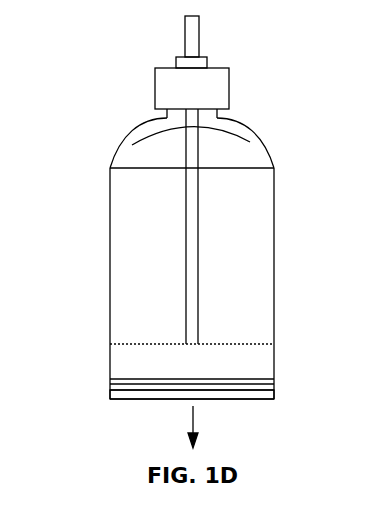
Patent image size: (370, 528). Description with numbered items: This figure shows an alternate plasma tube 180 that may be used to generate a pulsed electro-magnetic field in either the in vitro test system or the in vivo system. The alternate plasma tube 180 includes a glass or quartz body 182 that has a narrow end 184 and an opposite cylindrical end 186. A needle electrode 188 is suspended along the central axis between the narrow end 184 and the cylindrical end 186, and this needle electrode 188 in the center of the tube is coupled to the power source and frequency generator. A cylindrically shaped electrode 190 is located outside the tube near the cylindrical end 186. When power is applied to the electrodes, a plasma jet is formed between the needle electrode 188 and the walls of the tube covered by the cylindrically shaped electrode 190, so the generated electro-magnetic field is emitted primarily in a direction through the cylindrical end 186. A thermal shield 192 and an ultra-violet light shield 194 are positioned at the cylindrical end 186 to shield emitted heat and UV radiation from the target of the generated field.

The alternate plasma tube 180 is at (153, 72).
The body 182 is at (112, 203).
The narrow end 184 is at (252, 137).
The cylindrical end 186 is at (262, 388).
The needle electrode 188 is at (190, 281).
The cylindrically shaped electrode 190 is at (148, 369).
The thermal shield 192 is at (249, 378).
The ultra-violet light shield 194 is at (263, 398).